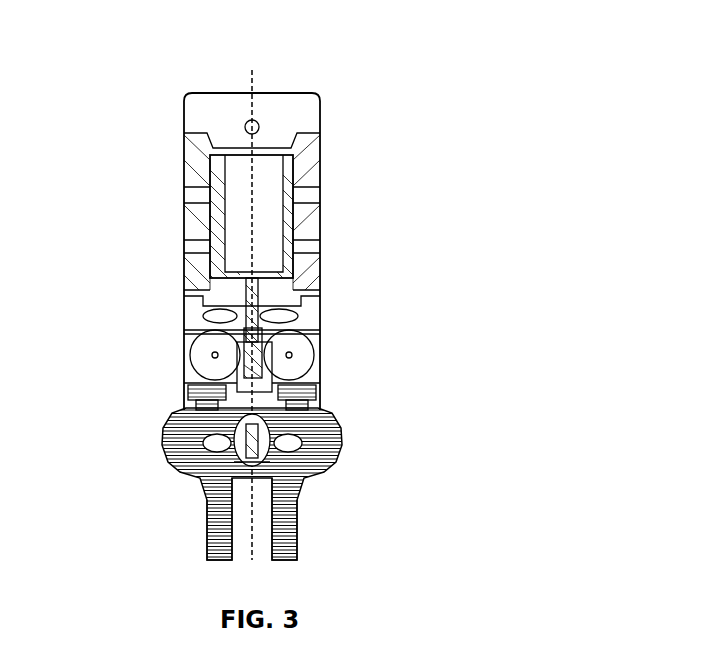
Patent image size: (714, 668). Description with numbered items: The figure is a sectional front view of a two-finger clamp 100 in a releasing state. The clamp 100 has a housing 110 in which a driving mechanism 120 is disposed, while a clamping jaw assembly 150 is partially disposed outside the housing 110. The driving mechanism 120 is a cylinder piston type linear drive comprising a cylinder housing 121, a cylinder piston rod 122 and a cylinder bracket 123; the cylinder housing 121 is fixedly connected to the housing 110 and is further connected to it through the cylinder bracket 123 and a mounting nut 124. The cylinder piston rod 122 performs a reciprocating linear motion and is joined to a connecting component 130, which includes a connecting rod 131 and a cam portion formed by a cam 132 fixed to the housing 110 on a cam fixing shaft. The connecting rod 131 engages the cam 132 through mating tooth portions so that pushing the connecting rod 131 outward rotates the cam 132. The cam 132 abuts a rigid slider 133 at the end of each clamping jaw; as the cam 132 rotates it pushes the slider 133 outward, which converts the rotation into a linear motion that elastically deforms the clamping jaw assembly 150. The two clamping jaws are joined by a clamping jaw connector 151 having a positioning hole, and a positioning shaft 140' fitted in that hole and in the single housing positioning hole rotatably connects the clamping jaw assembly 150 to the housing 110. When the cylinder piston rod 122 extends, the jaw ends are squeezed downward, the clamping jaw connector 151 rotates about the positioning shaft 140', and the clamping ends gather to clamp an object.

The clamp 100 is at (82, 47).
The housing 110 is at (283, 112).
The driving mechanism 120 is at (392, 253).
The cylinder housing 121 is at (283, 172).
The cylinder piston rod 122 is at (283, 332).
The cylinder bracket 123 is at (305, 280).
The mounting nut 124 is at (290, 311).
The connecting component 130 is at (319, 389).
The connecting rod 131 is at (320, 410).
The cam 132 is at (300, 360).
The slider 133 is at (183, 383).
The positioning shaft 140' is at (253, 484).
The clamping jaw assembly 150 is at (160, 435).
The clamping jaw connector 151 is at (183, 485).